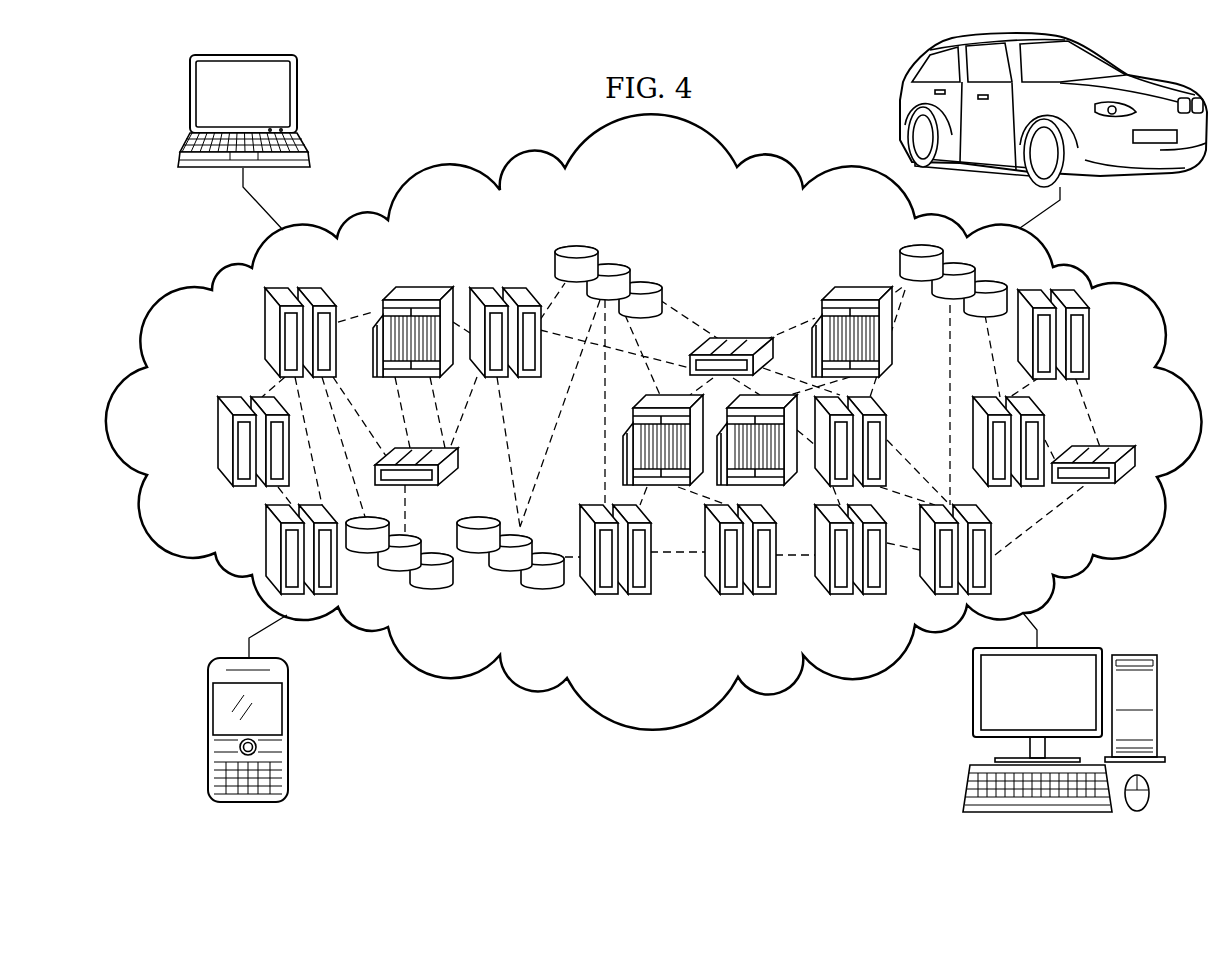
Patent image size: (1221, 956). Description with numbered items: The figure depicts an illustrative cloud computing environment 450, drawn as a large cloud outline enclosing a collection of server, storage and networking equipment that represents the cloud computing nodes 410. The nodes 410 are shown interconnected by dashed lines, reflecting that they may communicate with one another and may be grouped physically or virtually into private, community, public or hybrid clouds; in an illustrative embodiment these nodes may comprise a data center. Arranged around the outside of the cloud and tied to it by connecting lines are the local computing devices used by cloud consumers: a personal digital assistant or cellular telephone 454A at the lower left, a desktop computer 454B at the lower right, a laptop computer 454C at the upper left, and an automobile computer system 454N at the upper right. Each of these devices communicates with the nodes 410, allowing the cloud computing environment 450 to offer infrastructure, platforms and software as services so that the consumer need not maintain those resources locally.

The cloud computing nodes 410 is at (490, 241).
The cloud computing environment 450 is at (652, 732).
The cellular telephone 454A is at (207, 727).
The desktop computer 454B is at (953, 725).
The laptop computer 454C is at (188, 95).
The automobile computer system 454N is at (1178, 66).